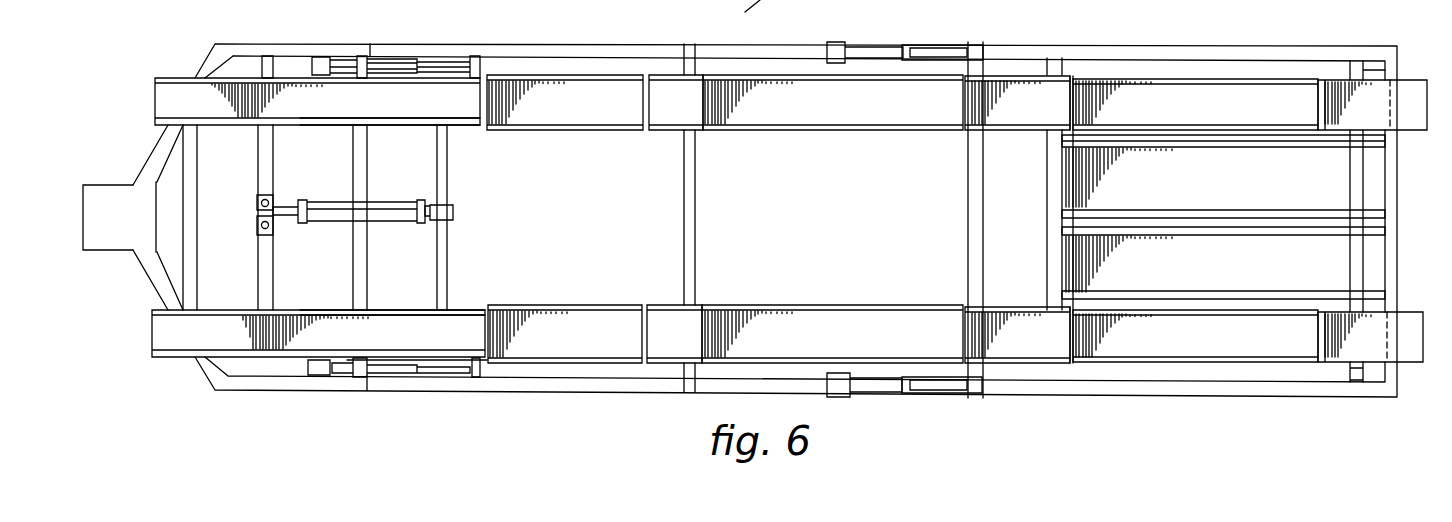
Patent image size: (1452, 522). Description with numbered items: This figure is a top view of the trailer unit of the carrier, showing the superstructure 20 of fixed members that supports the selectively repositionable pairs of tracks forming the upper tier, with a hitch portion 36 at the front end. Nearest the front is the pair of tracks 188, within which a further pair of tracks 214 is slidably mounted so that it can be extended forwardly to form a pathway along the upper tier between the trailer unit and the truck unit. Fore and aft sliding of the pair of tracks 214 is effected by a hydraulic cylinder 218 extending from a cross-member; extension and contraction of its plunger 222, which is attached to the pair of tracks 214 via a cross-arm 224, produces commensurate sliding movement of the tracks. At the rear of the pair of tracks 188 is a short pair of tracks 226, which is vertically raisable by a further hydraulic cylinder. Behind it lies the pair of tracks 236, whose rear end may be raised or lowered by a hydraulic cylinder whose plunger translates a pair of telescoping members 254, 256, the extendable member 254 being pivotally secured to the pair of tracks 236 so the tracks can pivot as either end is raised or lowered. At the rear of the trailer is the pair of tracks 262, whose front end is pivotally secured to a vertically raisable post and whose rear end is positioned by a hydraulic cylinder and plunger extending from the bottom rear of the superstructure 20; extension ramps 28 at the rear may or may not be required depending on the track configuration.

The superstructure 20 is at (536, 400).
The extension ramps 28 is at (1408, 82).
The hitch 36 is at (104, 184).
The pair of tracks 188 is at (335, 127).
The pair of tracks 214 is at (294, 86).
The hydraulic cylinder 218 is at (397, 200).
The plunger 222 is at (283, 215).
The cross-arm 224 is at (450, 204).
The short pair of tracks 226 is at (660, 88).
The pair of tracks 236 is at (782, 115).
The telescoping member 254 is at (943, 53).
The telescoping member 256 is at (880, 50).
The pair of tracks 262 is at (1197, 93).